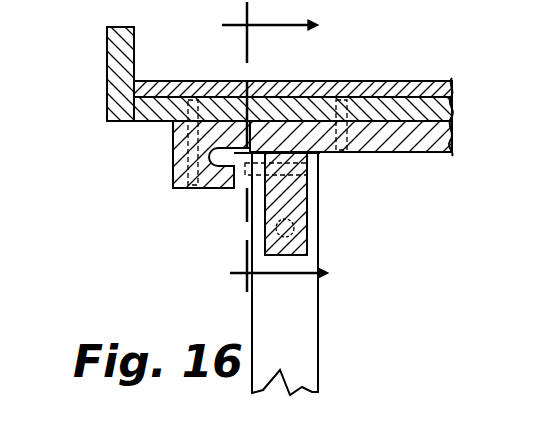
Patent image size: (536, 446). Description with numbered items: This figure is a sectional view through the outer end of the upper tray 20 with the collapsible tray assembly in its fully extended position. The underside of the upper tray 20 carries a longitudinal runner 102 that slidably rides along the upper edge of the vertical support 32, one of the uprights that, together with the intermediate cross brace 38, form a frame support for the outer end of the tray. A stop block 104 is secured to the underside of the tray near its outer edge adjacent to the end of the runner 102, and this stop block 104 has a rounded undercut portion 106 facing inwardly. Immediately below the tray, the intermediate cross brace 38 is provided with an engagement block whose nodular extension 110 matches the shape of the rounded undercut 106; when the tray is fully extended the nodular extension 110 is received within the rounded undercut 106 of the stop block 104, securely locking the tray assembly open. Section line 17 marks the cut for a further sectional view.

The upper tray 20 is at (158, 80).
The nodular extension 110 is at (293, 80).
The runner 102 is at (410, 152).
The stop block 104 is at (165, 178).
The rounded undercut portion 106 is at (228, 190).
The intermediate cross brace 38 is at (308, 195).
The vertical support 32 is at (318, 337).
The section line 17- 17 is at (294, 148).